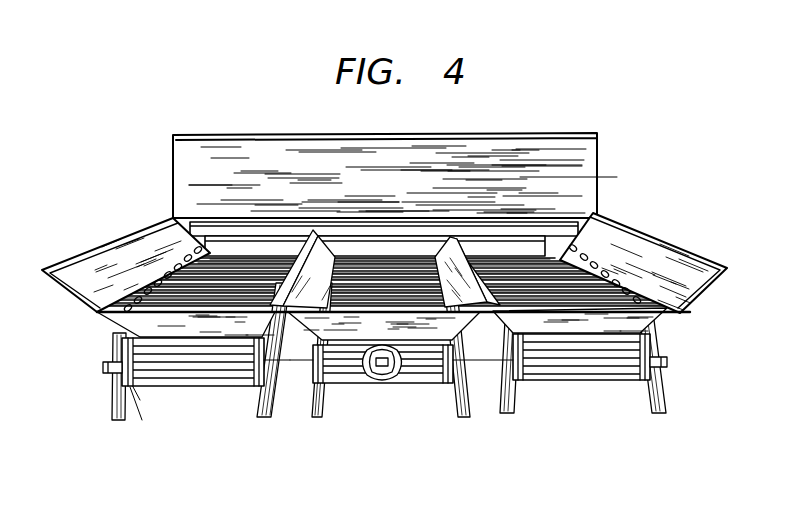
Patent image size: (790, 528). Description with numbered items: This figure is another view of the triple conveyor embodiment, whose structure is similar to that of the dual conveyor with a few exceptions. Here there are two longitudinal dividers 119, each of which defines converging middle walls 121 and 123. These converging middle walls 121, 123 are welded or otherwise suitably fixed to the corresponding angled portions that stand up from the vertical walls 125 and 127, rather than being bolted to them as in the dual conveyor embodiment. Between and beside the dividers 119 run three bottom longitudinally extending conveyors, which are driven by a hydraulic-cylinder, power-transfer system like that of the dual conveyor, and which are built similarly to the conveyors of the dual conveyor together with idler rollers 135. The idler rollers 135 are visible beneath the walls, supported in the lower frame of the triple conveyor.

The longitudinal divider 119 is at (287, 244).
The converging middle wall 121 is at (309, 272).
The converging middle wall 123 is at (448, 236).
The vertical wall 125 is at (325, 418).
The vertical wall 127 is at (271, 418).
The idler roller 135 is at (383, 382).